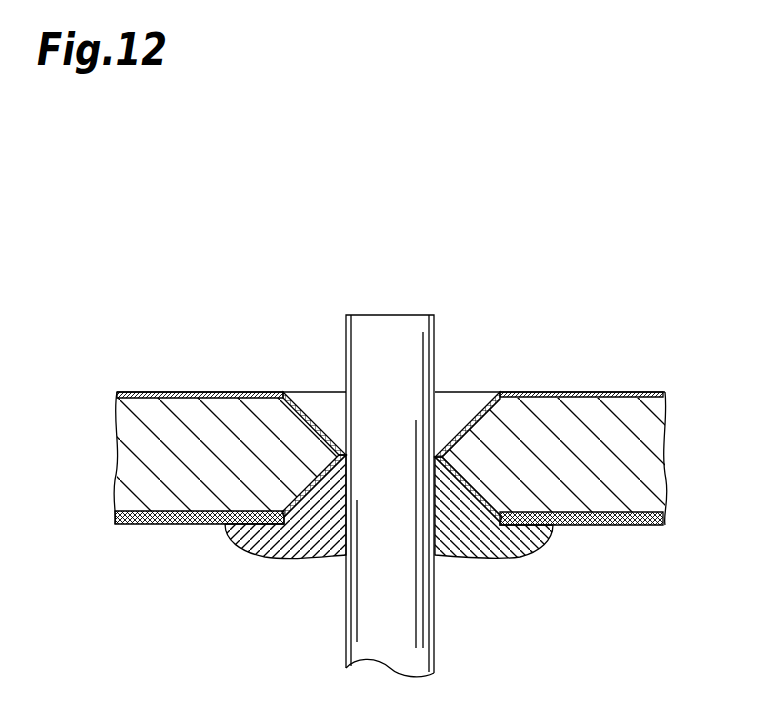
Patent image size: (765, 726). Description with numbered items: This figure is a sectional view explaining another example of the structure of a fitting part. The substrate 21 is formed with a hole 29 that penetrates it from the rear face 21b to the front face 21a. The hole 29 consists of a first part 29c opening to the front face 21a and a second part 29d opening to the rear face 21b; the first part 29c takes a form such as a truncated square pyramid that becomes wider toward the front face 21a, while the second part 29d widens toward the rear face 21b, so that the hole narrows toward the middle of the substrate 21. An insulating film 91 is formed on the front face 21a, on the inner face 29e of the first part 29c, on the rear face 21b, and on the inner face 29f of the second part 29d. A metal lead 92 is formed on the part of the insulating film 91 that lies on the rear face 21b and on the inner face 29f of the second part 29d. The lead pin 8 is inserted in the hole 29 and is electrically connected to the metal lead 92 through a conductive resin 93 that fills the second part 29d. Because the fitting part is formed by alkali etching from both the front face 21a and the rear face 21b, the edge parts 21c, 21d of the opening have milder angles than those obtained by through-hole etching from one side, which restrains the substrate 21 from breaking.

The lead pin 8 is at (390, 330).
The substrate 21 is at (655, 458).
The front face 21a is at (625, 392).
The rear face 21b is at (625, 527).
The edge part 21c is at (500, 395).
The edge part 21d is at (502, 522).
The hole 29 is at (477, 445).
The first part 29c is at (461, 422).
The second part 29d is at (459, 487).
The inner face of the first part 29e is at (298, 400).
The inner face of the second part 29f is at (286, 520).
The insulating film 91 is at (157, 392).
The metal lead 92 is at (156, 525).
The conductive resin 93 is at (310, 542).